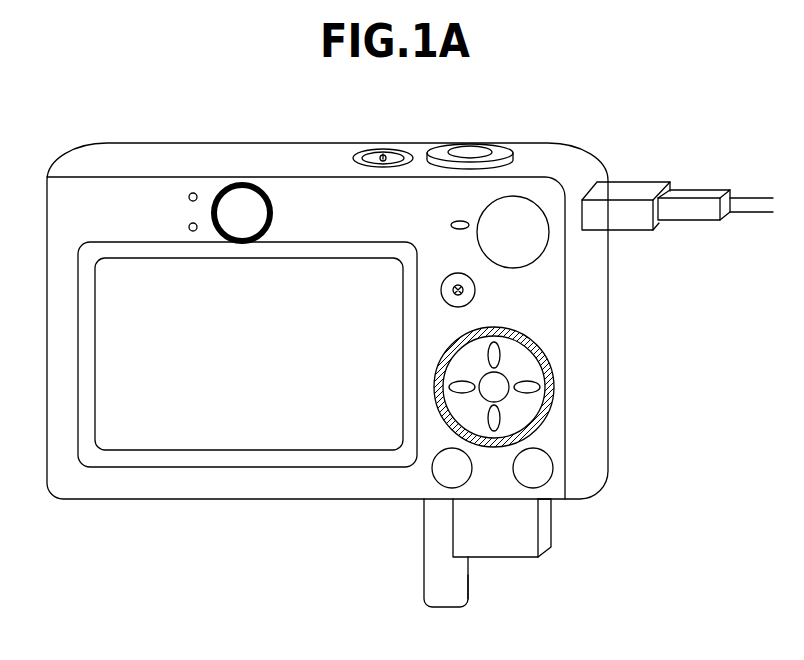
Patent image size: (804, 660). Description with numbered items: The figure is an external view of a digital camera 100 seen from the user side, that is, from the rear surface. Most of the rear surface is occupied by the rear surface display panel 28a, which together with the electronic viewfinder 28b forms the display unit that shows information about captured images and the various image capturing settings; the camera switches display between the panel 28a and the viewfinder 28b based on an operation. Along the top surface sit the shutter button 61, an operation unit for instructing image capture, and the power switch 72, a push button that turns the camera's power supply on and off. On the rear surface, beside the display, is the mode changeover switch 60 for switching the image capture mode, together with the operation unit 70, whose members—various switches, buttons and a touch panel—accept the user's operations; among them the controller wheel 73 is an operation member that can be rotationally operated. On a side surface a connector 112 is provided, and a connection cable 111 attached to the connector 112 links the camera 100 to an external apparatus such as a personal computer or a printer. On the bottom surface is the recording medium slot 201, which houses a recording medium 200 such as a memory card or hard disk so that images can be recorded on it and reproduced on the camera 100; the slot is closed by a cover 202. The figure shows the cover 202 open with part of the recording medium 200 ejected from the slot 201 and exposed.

The digital camera 100 is at (163, 543).
The rear surface display panel 28a is at (146, 283).
The electronic viewfinder 28b is at (240, 200).
The power switch 72 is at (383, 155).
The shutter button 61 is at (485, 150).
The mode changeover switch 60 is at (533, 215).
The operation unit 70 is at (495, 176).
The controller wheel 73 is at (445, 346).
The connector 112 is at (632, 182).
The connection cable 111 is at (697, 190).
The recording medium 200 is at (522, 528).
The recording medium slot 201 is at (475, 500).
The cover 202 is at (470, 590).